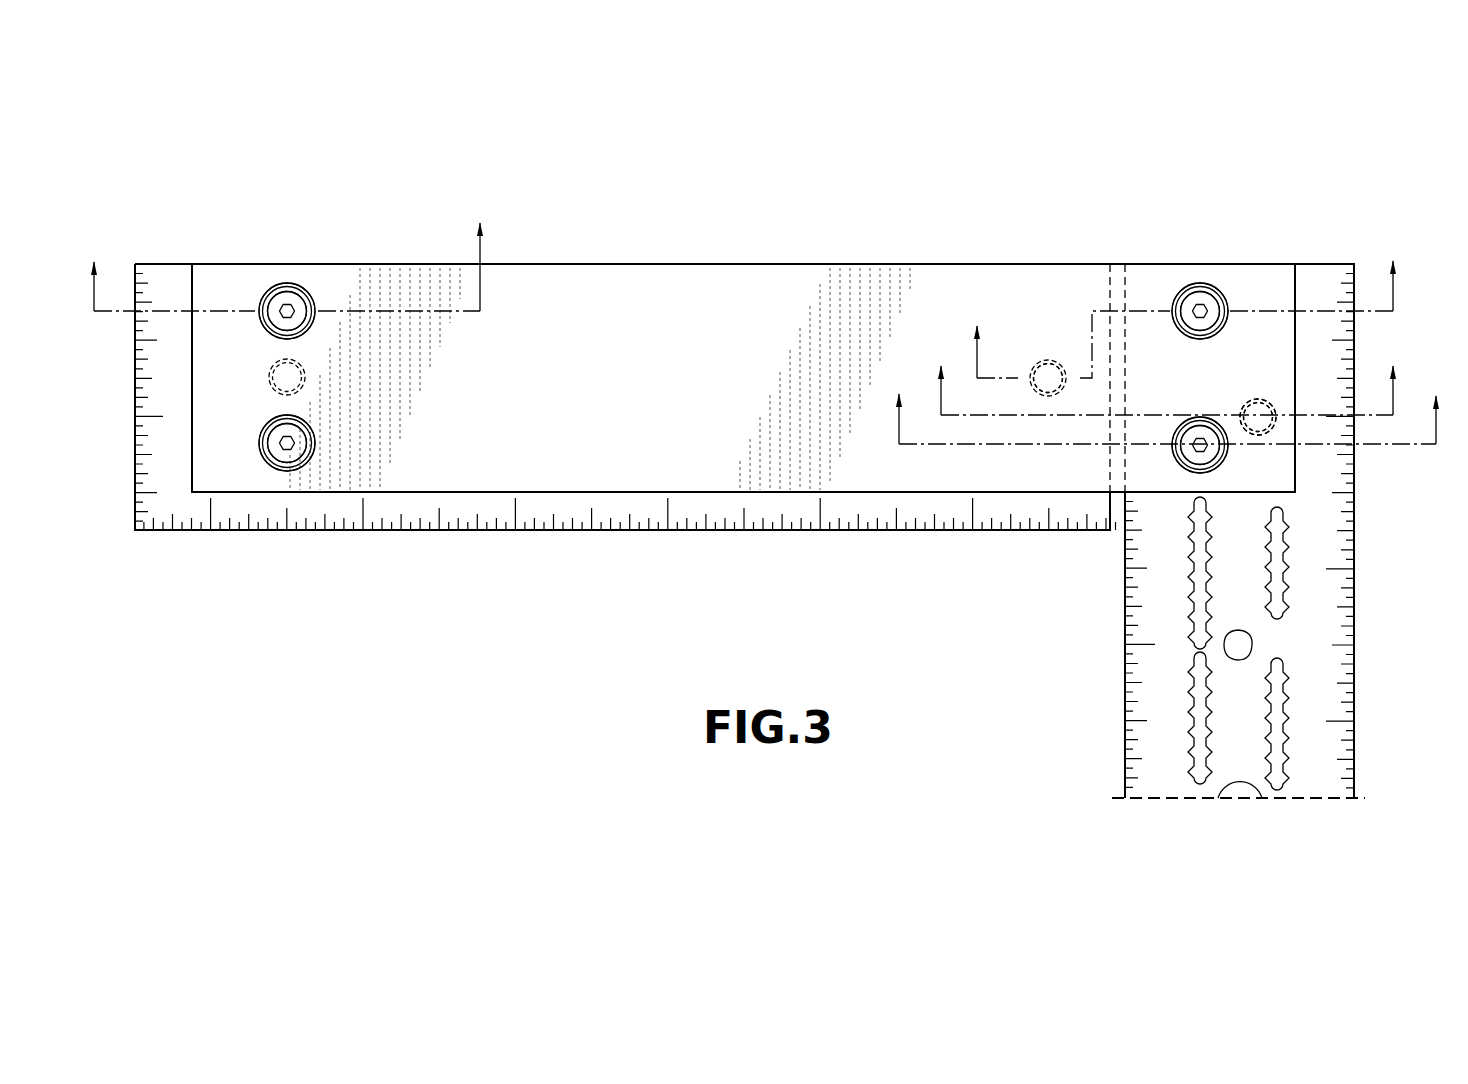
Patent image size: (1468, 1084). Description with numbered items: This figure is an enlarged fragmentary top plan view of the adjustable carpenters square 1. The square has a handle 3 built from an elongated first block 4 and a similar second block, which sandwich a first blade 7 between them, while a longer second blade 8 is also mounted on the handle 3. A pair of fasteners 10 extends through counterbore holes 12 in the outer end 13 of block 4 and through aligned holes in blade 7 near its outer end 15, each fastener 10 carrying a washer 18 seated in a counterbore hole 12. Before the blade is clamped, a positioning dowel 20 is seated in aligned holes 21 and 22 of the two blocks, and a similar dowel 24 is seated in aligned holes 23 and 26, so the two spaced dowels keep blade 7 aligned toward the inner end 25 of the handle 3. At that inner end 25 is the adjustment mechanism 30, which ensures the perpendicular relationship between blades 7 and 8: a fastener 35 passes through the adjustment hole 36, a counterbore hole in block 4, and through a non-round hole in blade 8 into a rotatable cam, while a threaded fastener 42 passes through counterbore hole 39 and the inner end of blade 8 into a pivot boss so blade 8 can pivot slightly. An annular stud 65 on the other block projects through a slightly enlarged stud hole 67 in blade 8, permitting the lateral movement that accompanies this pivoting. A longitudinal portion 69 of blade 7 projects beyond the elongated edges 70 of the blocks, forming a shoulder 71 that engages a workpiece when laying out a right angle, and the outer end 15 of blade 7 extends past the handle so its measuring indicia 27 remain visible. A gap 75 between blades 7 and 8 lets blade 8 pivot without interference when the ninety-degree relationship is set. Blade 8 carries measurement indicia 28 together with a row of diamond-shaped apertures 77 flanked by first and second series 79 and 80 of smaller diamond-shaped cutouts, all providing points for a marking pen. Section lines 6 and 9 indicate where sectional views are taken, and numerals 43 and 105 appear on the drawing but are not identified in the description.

The carpenters square 1 is at (968, 183).
The handle 3 is at (748, 252).
The first block 4 is at (643, 300).
The section line 6- 6 is at (286, 251).
The first blade 7 is at (1185, 305).
The second blade 8 is at (1125, 722).
The section line 9- 9 is at (1167, 406).
The fasteners 10 is at (273, 306).
The counterbore holes 12 is at (303, 293).
The outer end of handle block 13 is at (227, 295).
The outer end of blade 15 is at (132, 498).
The washer 18 is at (291, 303).
The positioning dowel 20 is at (364, 378).
The hole 21 is at (364, 385).
The hole 22 is at (302, 381).
The hole 23 is at (1035, 301).
The dowel 24 is at (1058, 395).
The inner end of handle 25 is at (1298, 288).
The hole 26 is at (1048, 360).
The measuring indicia 27 is at (160, 353).
The measurement indicia 28 is at (1340, 625).
The adjustment mechanism 30 is at (1235, 390).
The fastener 35 is at (1212, 453).
The adjustment hole 36 is at (1180, 436).
The counterbore hole 39 is at (1213, 295).
The threaded fastener 42 is at (1180, 302).
The knob ring 43 is at (1203, 418).
The annular stud 65 is at (1268, 428).
The stud hole 67 is at (1262, 436).
The longitudinal portion of blade 69 is at (570, 497).
The elongated edges of blocks 70 is at (743, 553).
The upper shoulder 71 is at (703, 495).
The gap 75 is at (1112, 508).
The diamond-shaped apertures 77 is at (1247, 643).
The first series of cutouts 79 is at (1195, 715).
The second series of cutouts 80 is at (1283, 698).
The second ruler edge 105 is at (1125, 583).